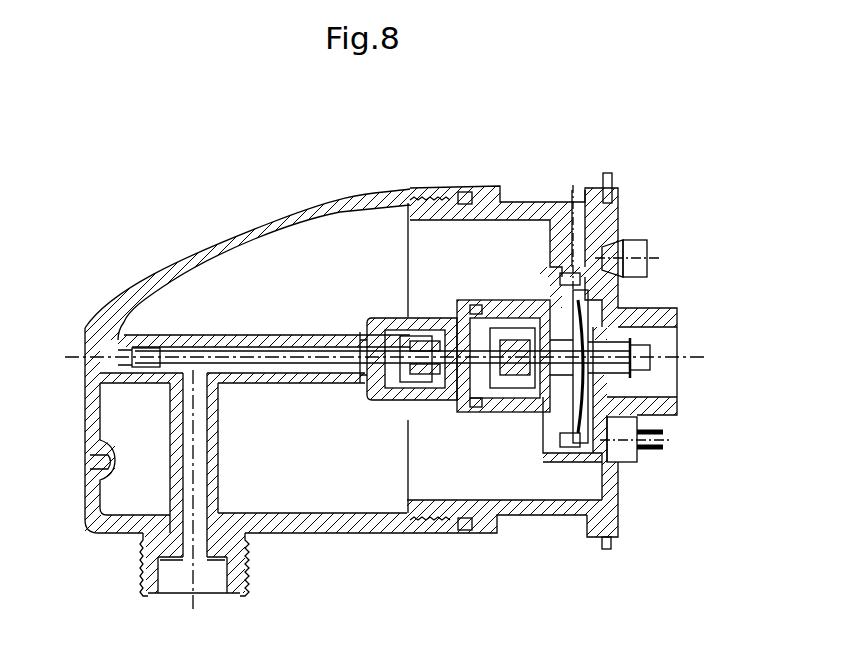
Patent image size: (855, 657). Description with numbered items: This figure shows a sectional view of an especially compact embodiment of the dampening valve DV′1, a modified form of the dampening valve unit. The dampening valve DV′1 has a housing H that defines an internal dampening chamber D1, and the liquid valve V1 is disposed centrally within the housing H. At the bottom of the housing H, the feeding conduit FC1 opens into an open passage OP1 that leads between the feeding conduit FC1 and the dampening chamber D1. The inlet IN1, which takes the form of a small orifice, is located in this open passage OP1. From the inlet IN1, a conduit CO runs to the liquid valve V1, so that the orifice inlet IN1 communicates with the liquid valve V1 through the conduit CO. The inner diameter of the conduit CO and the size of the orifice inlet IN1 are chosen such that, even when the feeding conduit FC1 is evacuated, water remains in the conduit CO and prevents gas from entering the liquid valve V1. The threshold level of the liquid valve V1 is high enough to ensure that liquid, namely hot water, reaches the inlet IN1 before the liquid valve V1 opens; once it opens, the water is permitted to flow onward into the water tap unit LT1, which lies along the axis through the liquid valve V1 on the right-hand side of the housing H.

The dampening valve DV′1 is at (515, 158).
The housing H is at (246, 241).
The dampening chamber D1 is at (323, 285).
The conduit CO is at (255, 380).
The liquid valve V1 is at (432, 412).
The water tap unit LT1 is at (424, 362).
The open passage OP1 is at (177, 578).
The inlet IN1 is at (223, 581).
The feeding conduit FC1 is at (200, 510).